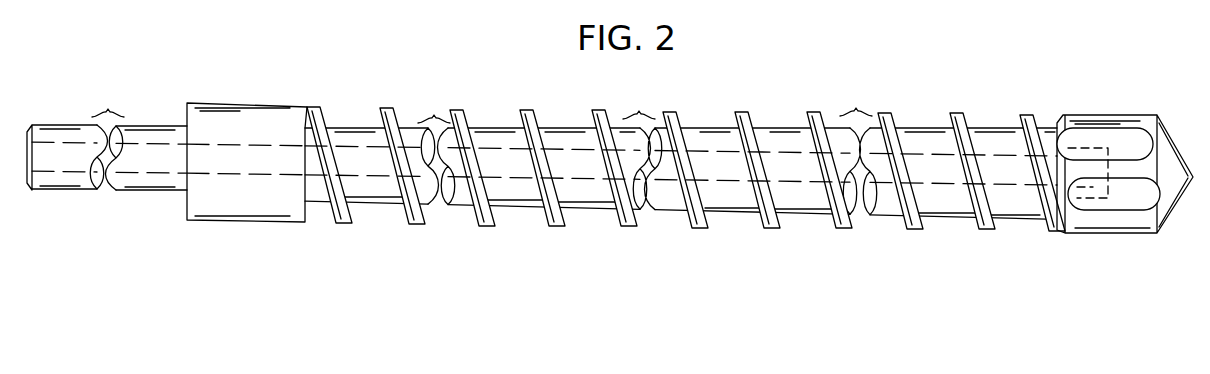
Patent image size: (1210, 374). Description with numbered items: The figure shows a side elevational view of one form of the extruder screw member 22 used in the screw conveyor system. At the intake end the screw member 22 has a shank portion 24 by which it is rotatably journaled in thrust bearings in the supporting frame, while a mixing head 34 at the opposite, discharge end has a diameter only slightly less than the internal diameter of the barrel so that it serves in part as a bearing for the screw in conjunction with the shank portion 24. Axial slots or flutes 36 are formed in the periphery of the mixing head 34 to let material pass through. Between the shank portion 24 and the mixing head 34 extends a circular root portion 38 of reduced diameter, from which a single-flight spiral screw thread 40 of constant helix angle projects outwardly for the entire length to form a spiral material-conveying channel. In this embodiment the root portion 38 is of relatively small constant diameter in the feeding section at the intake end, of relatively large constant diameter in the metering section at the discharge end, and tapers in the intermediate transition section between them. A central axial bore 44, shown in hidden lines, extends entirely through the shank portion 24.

The screw member 22 is at (325, 122).
The shank portion 24 is at (148, 125).
The mixing head 34 is at (1090, 228).
The axial slots or flutes 36 is at (1115, 138).
The root portion 38 is at (535, 205).
The spiral screw thread 40 is at (686, 122).
The central axial bore 44 is at (747, 182).